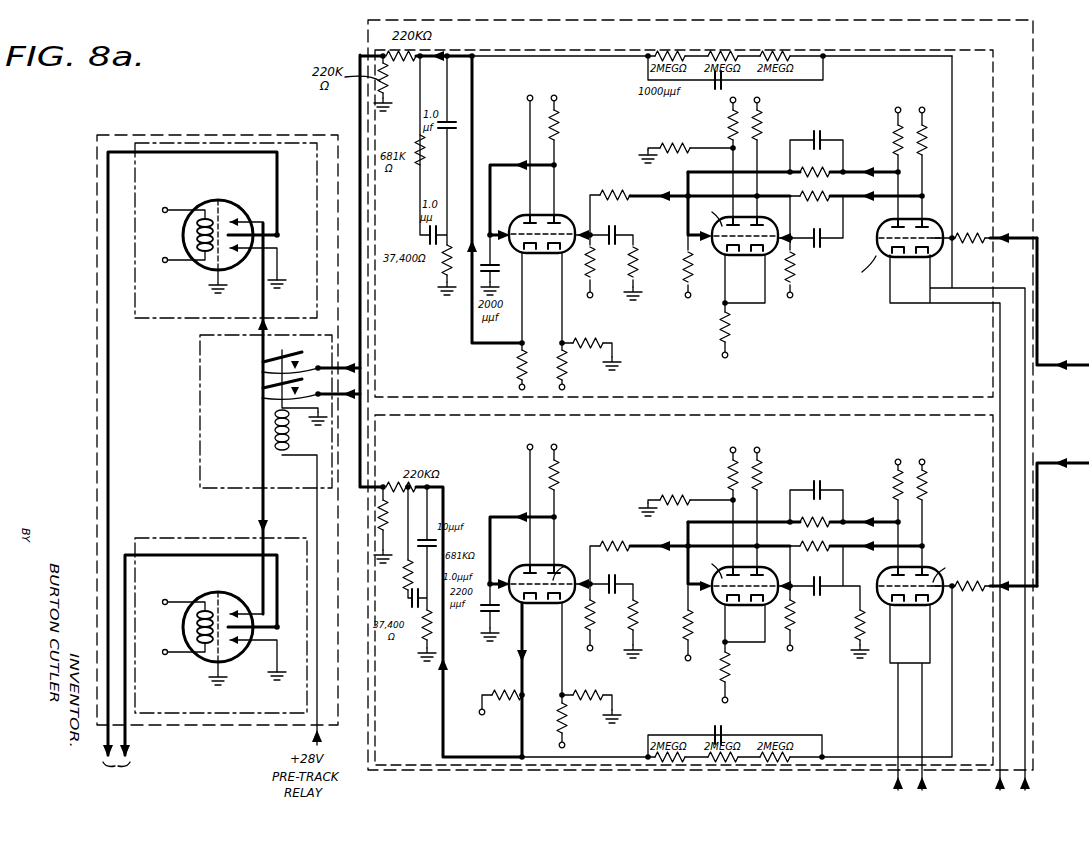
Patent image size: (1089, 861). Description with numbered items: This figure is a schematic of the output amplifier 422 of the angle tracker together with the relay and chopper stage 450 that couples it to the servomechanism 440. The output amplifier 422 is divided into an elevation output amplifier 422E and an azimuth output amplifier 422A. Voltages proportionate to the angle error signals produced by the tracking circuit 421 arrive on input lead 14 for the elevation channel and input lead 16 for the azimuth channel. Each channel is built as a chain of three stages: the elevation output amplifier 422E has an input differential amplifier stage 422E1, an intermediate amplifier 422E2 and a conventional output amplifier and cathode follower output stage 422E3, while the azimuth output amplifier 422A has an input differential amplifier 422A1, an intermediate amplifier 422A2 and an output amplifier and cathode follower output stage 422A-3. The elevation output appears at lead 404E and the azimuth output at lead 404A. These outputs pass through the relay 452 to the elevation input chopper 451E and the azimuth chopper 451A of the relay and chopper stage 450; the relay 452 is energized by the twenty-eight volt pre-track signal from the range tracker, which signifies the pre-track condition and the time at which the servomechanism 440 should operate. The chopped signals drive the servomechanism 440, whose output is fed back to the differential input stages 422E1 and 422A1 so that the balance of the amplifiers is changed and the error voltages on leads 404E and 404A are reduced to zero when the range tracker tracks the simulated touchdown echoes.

The output amplifier 422 is at (368, 50).
The elevation output amplifier 422E is at (912, 56).
The azimuth output amplifier 422A is at (684, 582).
The input differential amplifier stage 422E1 is at (940, 343).
The intermediate amplifier 422E2 is at (767, 386).
The output amplifier and cathode follower output stage 422E3 is at (467, 386).
The input differential amplifier 422A1 is at (982, 543).
The intermediate amplifier 422A2 is at (795, 695).
The output amplifier and cathode follower output stage 422A-3 is at (512, 675).
The relay and chopper stage 450 is at (212, 135).
The elevation input chopper 451E is at (170, 318).
The azimuth chopper 451A is at (202, 538).
The relay 452 is at (200, 423).
The lead 404E is at (262, 373).
The lead 404A is at (262, 398).
The input lead 14 is at (1037, 322).
The input lead 16 is at (1037, 561).
The tracking circuit 421 is at (1059, 419).
The servomechanism 440 is at (557, 785).